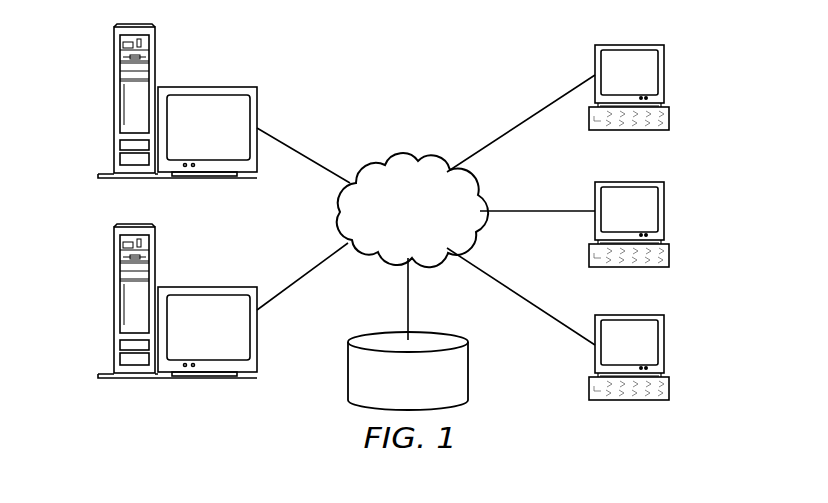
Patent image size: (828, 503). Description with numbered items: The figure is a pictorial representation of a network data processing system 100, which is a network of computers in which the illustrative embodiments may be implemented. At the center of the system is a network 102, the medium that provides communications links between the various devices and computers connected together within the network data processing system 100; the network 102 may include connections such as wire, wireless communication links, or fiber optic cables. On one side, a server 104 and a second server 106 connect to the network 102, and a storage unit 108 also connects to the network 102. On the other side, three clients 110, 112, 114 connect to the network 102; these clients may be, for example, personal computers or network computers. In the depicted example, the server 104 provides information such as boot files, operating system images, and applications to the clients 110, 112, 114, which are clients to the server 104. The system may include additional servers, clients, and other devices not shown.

The network data processing system 100 is at (458, 65).
The network 102 is at (383, 162).
The server 104 is at (113, 103).
The server 106 is at (113, 303).
The storage unit 108 is at (348, 377).
The client 110 is at (665, 73).
The client 112 is at (665, 212).
The client 114 is at (665, 345).